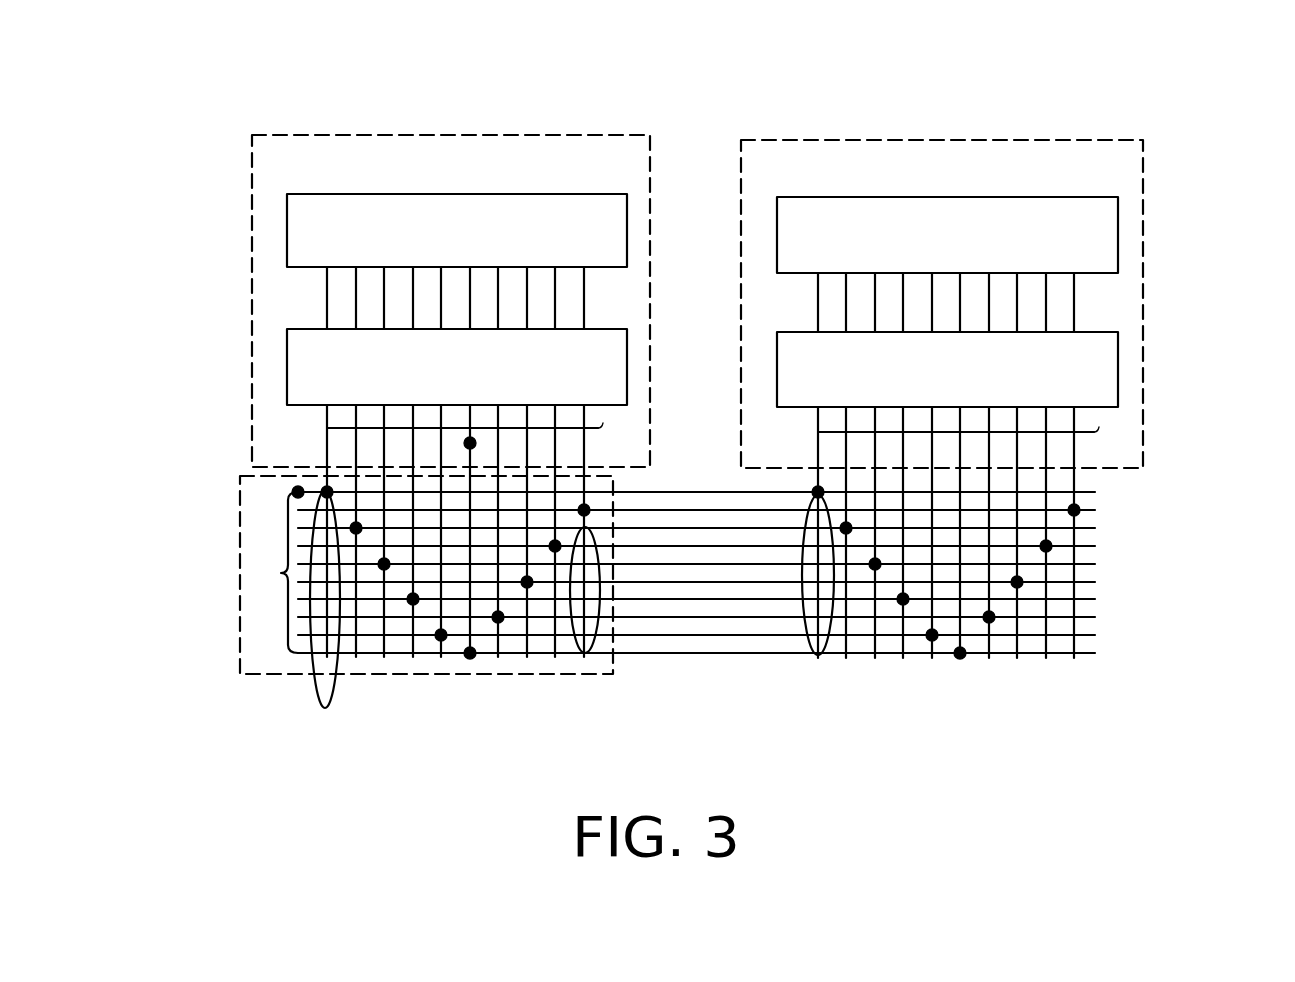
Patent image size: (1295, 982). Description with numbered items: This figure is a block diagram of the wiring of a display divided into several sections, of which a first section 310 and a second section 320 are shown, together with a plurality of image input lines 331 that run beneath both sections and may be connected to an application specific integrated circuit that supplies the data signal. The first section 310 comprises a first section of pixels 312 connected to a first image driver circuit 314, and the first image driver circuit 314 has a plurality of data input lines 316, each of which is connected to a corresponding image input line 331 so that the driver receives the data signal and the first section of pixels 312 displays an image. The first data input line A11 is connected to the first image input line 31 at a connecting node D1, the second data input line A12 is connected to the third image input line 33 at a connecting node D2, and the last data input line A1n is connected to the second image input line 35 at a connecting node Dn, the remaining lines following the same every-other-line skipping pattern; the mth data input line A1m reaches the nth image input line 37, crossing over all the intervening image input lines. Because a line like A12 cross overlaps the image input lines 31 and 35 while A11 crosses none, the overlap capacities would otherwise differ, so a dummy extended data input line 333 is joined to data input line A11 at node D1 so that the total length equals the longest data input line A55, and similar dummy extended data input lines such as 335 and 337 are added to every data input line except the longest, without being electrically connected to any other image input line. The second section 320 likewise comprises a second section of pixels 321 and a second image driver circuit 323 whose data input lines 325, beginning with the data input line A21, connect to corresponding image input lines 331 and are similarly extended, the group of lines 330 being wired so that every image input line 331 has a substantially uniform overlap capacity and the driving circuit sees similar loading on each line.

The first section 310 is at (252, 163).
The first section of pixels 312 is at (287, 243).
The first image driver circuit 314 is at (287, 355).
The data input lines 316 is at (553, 428).
The second section 320 is at (1143, 195).
The second section of pixels 321 is at (1118, 255).
The second image driver circuit 323 is at (1118, 380).
The data input lines 325 is at (1045, 432).
The signal routing block 330 is at (236, 645).
The image input lines 331 is at (282, 573).
The dummy extended data input line 333 is at (320, 690).
The dummy extended data input line 335 is at (598, 641).
The third connection region 337 is at (808, 655).
The first image input line 31 is at (290, 488).
The third image input line 33 is at (1097, 528).
The second image input line 35 is at (1080, 511).
The nth image input line 37 is at (1083, 659).
The first data input line A11 is at (323, 412).
The second data input line A12 is at (352, 455).
The mth data input line A1m is at (470, 443).
The last data input line A1n is at (590, 438).
The signal line A21 is at (818, 420).
The longest data input line A55 is at (470, 643).
The connecting node D1 is at (320, 497).
The connecting node D2 is at (348, 532).
The connecting node Dn is at (590, 511).